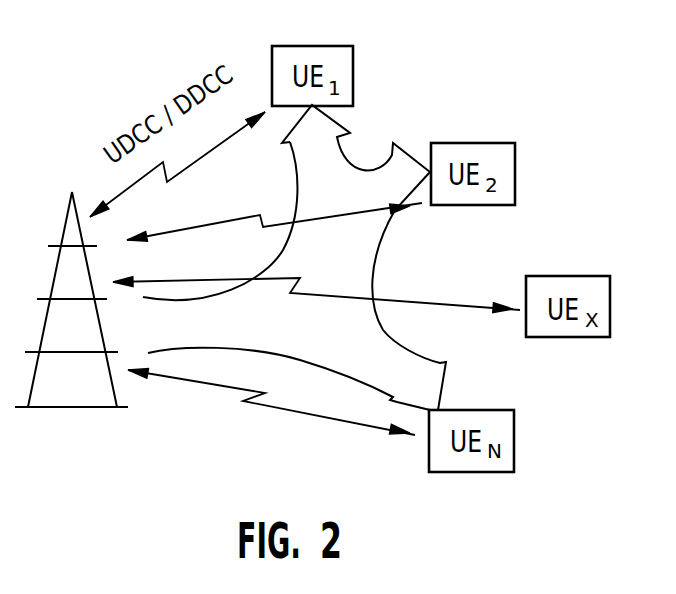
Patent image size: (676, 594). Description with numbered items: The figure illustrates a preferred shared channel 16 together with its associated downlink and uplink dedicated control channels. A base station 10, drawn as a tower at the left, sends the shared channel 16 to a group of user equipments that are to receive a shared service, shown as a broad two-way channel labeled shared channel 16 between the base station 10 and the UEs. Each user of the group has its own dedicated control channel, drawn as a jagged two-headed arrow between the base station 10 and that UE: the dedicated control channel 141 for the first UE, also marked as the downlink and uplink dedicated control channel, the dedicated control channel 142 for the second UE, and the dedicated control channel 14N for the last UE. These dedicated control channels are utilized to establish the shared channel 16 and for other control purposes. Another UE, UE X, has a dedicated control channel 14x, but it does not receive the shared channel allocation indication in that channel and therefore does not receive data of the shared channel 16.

The base station 10 is at (71, 299).
The dedicated control channel 141 is at (203, 160).
The dedicated control channel 142 is at (232, 217).
The dedicated control channel 14x is at (388, 294).
The dedicated control channel 14N is at (345, 425).
The shared channel 16 is at (274, 360).